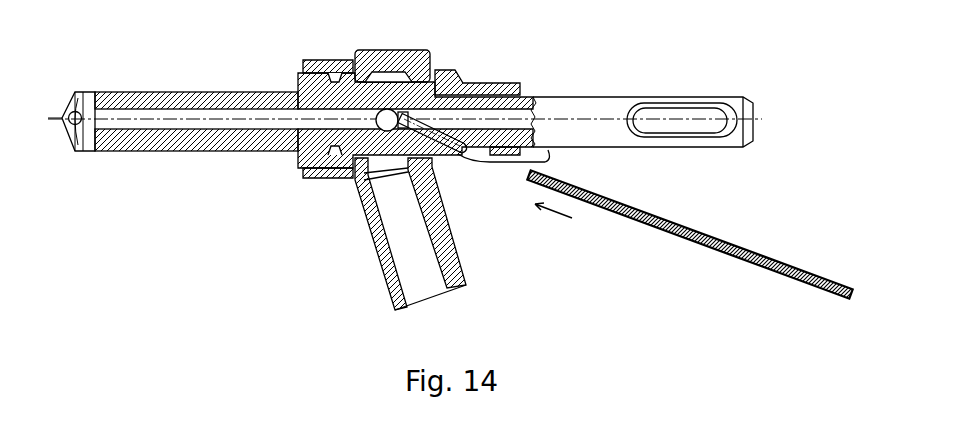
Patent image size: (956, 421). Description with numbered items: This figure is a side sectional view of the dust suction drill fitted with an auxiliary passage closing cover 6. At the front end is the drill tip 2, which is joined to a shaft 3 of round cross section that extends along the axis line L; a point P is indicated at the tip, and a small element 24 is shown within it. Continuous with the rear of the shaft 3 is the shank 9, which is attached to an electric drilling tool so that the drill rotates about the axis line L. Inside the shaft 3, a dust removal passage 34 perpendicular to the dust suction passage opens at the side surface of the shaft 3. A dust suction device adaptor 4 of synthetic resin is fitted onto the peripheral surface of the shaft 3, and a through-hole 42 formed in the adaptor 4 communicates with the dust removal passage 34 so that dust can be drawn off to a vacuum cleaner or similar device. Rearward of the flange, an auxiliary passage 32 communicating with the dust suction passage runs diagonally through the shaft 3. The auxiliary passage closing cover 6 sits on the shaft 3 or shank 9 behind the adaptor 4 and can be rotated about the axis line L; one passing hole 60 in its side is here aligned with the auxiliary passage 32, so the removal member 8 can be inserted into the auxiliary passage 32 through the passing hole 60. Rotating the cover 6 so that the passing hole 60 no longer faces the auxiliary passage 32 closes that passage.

The drill tip 2 is at (72, 104).
The ball 24 is at (63, 116).
The point P is at (63, 121).
The shaft 3 is at (185, 93).
The shank 9 is at (530, 95).
The dust removal passage 34 is at (390, 110).
The auxiliary passage closing cover 6 is at (462, 70).
The auxiliary passage 32 is at (470, 157).
The passing hole 60 is at (546, 162).
The dust suction device adaptor 4 is at (467, 287).
The through-hole 42 is at (408, 290).
The axis line L is at (690, 120).
The removal member 8 is at (773, 256).